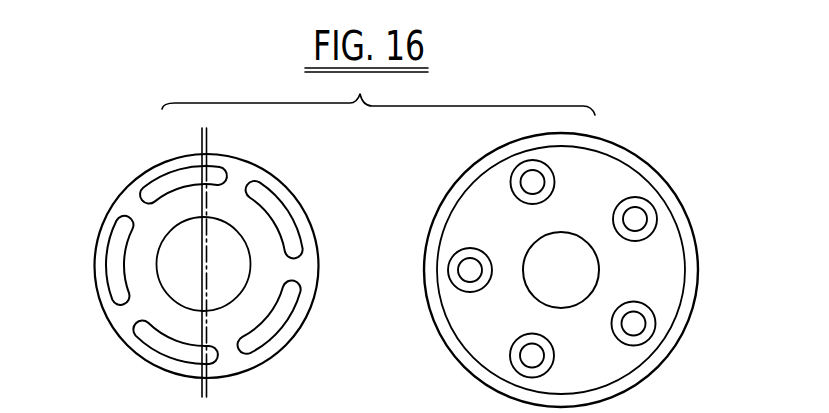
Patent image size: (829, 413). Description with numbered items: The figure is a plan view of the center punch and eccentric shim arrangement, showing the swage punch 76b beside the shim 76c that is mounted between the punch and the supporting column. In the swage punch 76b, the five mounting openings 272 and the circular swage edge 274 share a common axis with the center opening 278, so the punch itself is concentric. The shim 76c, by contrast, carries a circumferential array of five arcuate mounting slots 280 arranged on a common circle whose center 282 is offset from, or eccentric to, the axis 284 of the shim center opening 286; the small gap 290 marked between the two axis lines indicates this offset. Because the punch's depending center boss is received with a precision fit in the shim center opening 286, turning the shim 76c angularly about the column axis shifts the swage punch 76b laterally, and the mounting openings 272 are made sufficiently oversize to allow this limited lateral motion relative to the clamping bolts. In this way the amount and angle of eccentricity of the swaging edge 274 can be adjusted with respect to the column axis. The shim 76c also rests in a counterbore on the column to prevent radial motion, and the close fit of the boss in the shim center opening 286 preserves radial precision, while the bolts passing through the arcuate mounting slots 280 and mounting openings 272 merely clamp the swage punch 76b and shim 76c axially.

The shim 76c is at (210, 262).
The swage punch 76b is at (589, 268).
The mounting openings 272 is at (637, 322).
The swage edge 274 is at (692, 233).
The center opening 278 is at (572, 243).
The arcuate mounting slots 280 is at (263, 340).
The center 282 is at (204, 268).
The axis 284 is at (201, 266).
The shim center opening 286 is at (176, 226).
The gap 290 is at (209, 138).